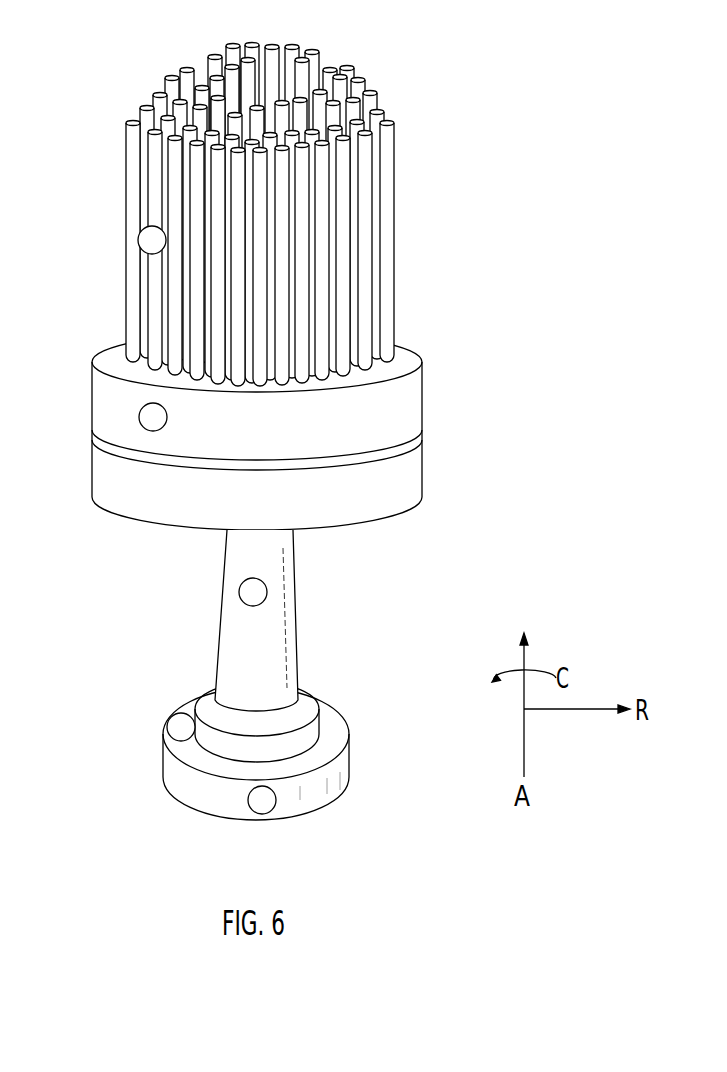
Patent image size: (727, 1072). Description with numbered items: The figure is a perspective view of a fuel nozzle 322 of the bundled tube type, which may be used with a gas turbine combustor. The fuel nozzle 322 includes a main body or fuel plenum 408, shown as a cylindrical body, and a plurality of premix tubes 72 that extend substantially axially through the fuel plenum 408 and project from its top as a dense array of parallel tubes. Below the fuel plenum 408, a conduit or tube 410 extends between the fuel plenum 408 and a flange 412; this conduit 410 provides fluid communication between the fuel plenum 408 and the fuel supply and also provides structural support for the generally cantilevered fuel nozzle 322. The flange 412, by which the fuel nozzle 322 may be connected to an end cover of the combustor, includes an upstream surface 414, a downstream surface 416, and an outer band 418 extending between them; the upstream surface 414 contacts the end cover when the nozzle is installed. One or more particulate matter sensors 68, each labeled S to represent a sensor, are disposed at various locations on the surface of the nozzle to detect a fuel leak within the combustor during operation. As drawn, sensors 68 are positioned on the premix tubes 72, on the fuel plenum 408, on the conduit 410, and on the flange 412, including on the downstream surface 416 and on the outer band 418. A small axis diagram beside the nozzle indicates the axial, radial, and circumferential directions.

The fuel nozzle 322 is at (98, 62).
The particulate matter sensor 68 is at (138, 240).
The premix tube 72 is at (300, 308).
The fuel plenum 408 is at (108, 426).
The conduit 410 is at (272, 703).
The flange 412 is at (351, 714).
The upstream surface 414 is at (180, 803).
The downstream surface 416 is at (334, 732).
The outer band 418 is at (222, 802).